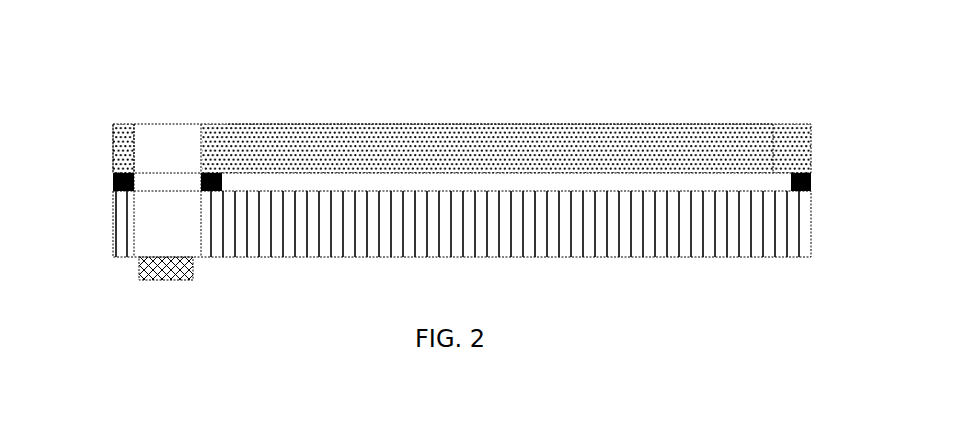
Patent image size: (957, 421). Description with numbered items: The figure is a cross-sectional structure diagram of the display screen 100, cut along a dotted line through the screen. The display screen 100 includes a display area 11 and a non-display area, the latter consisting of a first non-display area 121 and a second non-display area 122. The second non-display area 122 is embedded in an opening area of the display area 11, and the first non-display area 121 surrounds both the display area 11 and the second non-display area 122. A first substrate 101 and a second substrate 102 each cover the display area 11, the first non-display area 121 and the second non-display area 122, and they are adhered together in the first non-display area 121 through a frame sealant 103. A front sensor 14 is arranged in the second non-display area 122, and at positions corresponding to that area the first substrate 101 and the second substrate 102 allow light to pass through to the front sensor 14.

The display screen 100 is at (797, 22).
The display area 11 is at (772, 121).
The first non-display area 121 is at (133, 121).
The second non-display area 122 is at (223, 121).
The first substrate 101 is at (804, 152).
The second substrate 102 is at (803, 226).
The frame sealant 103 is at (113, 182).
The front sensor 14 is at (139, 267).